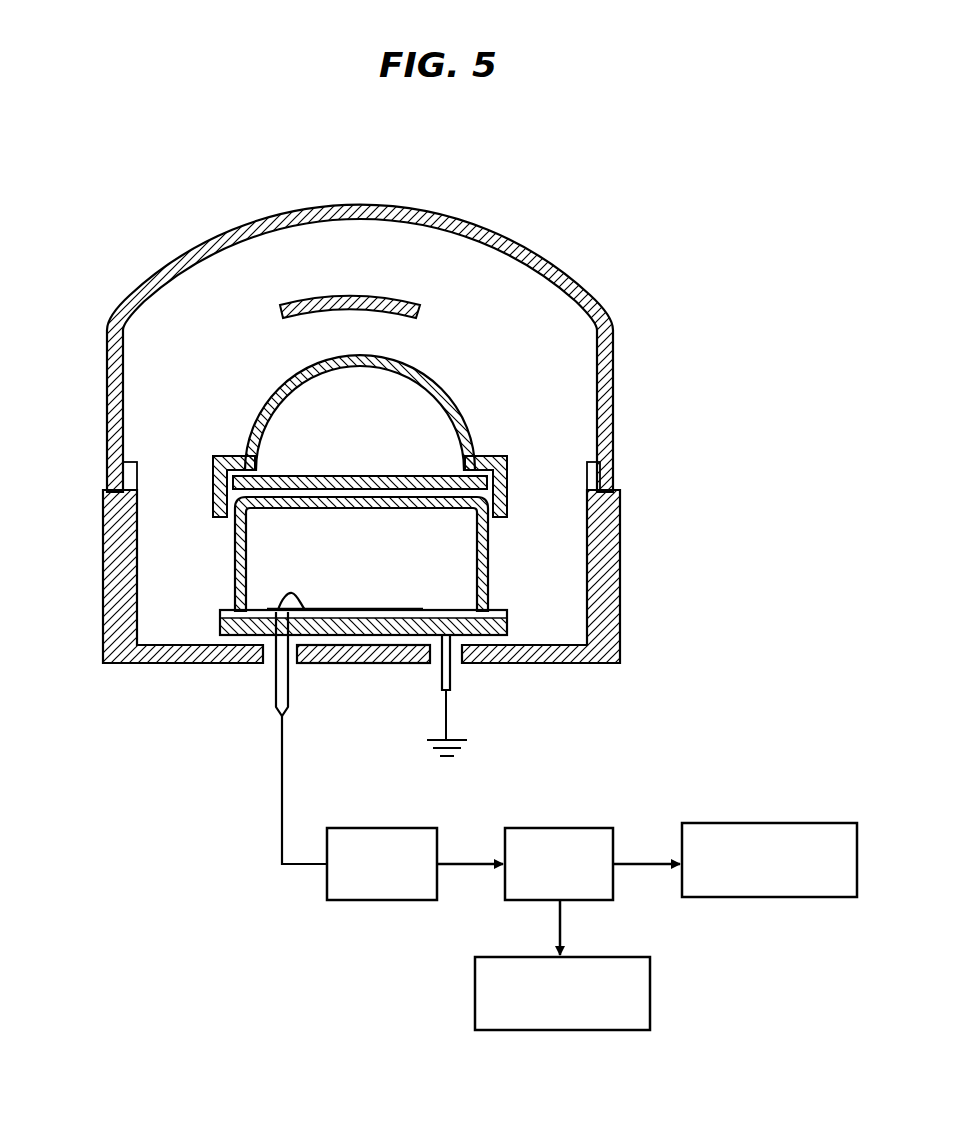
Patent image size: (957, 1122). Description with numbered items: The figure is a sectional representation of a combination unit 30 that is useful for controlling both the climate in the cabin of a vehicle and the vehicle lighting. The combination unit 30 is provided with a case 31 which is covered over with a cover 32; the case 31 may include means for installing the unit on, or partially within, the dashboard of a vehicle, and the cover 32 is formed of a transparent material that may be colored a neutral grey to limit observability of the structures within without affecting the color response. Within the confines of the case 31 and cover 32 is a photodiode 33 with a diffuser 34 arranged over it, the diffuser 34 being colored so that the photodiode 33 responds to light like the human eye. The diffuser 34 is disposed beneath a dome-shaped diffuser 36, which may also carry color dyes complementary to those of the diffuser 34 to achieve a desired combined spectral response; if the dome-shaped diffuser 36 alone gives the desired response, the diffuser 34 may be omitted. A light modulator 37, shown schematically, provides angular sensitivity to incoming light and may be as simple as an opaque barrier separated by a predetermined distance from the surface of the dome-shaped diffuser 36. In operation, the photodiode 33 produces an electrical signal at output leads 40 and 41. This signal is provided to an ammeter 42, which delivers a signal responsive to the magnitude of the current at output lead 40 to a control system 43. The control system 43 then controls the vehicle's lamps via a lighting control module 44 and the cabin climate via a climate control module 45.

The combination unit 30 is at (50, 414).
The case 31 is at (620, 615).
The cover 32 is at (185, 248).
The photodiode 33 is at (490, 565).
The diffuser 34 is at (380, 474).
The dome-shaped diffuser 36 is at (265, 400).
The light modulator 37 is at (305, 298).
The output lead 40 is at (275, 678).
The output lead 41 is at (440, 668).
The ammeter 42 is at (385, 828).
The control system 43 is at (582, 828).
The lighting control module 44 is at (770, 823).
The climate control module 45 is at (650, 975).